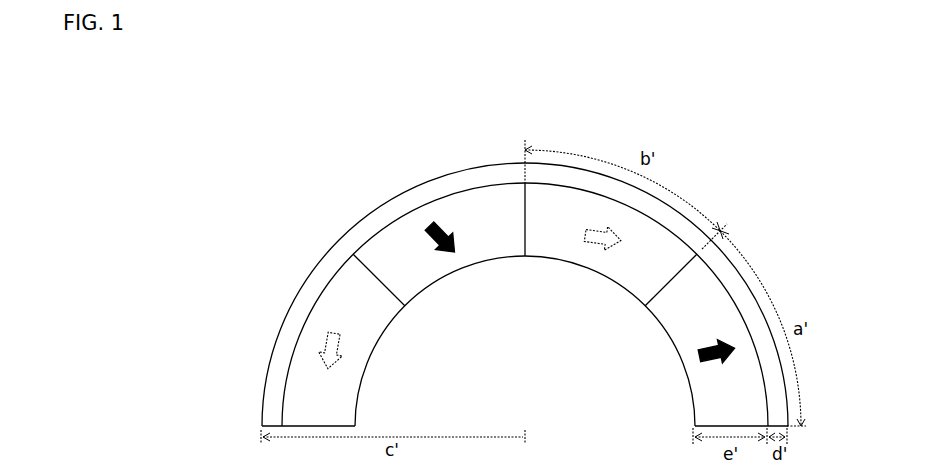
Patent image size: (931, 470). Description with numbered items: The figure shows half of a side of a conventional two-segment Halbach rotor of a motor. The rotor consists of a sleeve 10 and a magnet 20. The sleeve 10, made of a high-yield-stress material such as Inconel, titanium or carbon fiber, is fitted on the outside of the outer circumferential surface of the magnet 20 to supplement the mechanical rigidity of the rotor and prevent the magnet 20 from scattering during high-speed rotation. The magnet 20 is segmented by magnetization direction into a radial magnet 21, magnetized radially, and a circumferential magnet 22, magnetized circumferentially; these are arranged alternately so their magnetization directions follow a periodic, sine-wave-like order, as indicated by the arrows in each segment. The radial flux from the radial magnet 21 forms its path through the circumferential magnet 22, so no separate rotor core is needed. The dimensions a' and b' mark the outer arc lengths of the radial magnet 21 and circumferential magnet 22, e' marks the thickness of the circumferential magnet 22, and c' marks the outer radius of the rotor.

The sleeve 10 is at (302, 310).
The magnet 20 is at (525, 240).
The radial magnet 21 is at (500, 237).
The circumferential magnet 22 is at (350, 300).